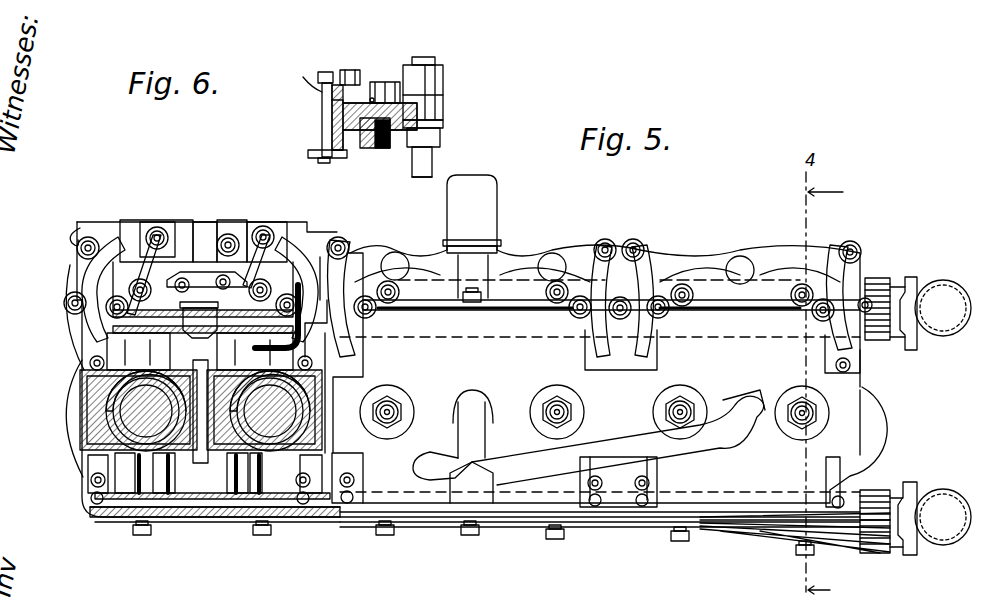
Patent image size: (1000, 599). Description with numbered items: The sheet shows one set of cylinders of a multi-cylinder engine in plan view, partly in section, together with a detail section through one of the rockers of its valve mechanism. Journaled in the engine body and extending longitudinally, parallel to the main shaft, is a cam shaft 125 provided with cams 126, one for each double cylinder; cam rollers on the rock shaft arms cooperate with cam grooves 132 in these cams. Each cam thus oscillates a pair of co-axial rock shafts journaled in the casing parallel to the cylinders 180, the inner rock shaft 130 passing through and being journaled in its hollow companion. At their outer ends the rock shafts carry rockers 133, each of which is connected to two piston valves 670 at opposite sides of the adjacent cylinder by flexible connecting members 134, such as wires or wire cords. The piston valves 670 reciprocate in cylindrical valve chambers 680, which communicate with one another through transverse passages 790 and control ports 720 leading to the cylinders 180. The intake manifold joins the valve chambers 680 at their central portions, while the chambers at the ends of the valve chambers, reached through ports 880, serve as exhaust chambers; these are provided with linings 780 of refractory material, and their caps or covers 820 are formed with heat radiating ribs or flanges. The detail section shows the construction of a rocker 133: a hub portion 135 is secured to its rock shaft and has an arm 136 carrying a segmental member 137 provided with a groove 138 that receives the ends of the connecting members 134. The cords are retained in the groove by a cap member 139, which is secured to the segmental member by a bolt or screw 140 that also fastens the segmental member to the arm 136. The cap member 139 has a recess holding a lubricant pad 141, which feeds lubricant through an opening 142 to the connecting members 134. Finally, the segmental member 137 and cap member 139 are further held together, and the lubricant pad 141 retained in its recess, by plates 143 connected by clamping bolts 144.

In FIG. 5, the cam shaft 125 is at (100, 225).
In FIG. 5, the cams 126 is at (148, 228).
In FIG. 6, the rock shaft 130 is at (423, 167).
In FIG. 5, the rock shaft 130 is at (440, 178).
In FIG. 5, the cam grooves 132 is at (165, 215).
In FIG. 5, the rockers 133 is at (97, 294).
In FIG. 6, the flexible connecting members 134 is at (332, 124).
In FIG. 5, the flexible connecting members 134 is at (353, 340).
In FIG. 6, the hub portion 135 is at (440, 92).
In FIG. 6, the arm 136 is at (441, 143).
In FIG. 6, the segmental member 137 is at (360, 147).
In FIG. 5, the segmental member 137 is at (80, 260).
In FIG. 6, the groove 138 is at (342, 137).
In FIG. 5, the groove 138 is at (82, 322).
In FIG. 6, the cap member 139 is at (372, 97).
In FIG. 6, the bolt or screw 140 is at (444, 117).
In FIG. 6, the lubricant pad 141 is at (300, 74).
In FIG. 6, the opening 142 is at (322, 101).
In FIG. 6, the plates 143 is at (303, 170).
In FIG. 6, the clamping bolts 144 is at (332, 113).
In FIG. 5, the cylinders 180 is at (80, 447).
In FIG. 5, the piston valves 670 is at (238, 540).
In FIG. 5, the valve chambers 680 is at (192, 345).
In FIG. 5, the ports 720 is at (147, 445).
In FIG. 5, the linings 780 is at (950, 338).
In FIG. 5, the transverse passages 790 is at (130, 380).
In FIG. 5, the caps or covers 820 is at (612, 528).
In FIG. 5, the ports 880 is at (106, 525).